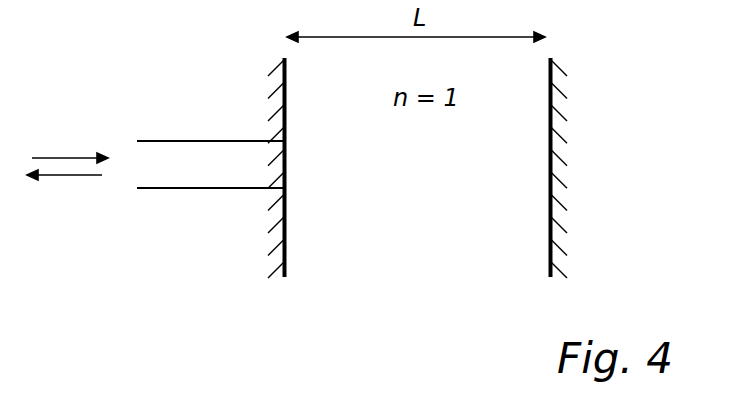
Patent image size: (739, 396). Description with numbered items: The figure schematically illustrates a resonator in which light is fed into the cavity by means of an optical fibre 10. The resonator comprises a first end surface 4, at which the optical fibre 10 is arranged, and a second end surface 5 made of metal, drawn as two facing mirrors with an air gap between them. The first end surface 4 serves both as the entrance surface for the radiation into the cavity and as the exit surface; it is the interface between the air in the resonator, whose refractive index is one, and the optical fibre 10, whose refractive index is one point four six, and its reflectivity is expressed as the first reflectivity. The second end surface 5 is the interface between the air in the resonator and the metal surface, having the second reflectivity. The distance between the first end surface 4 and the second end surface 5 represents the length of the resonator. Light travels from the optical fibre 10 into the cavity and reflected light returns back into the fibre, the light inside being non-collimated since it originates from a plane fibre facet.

The first end surface 4 is at (285, 236).
The second end surface 5 is at (549, 240).
The optical fibre 10 is at (140, 170).